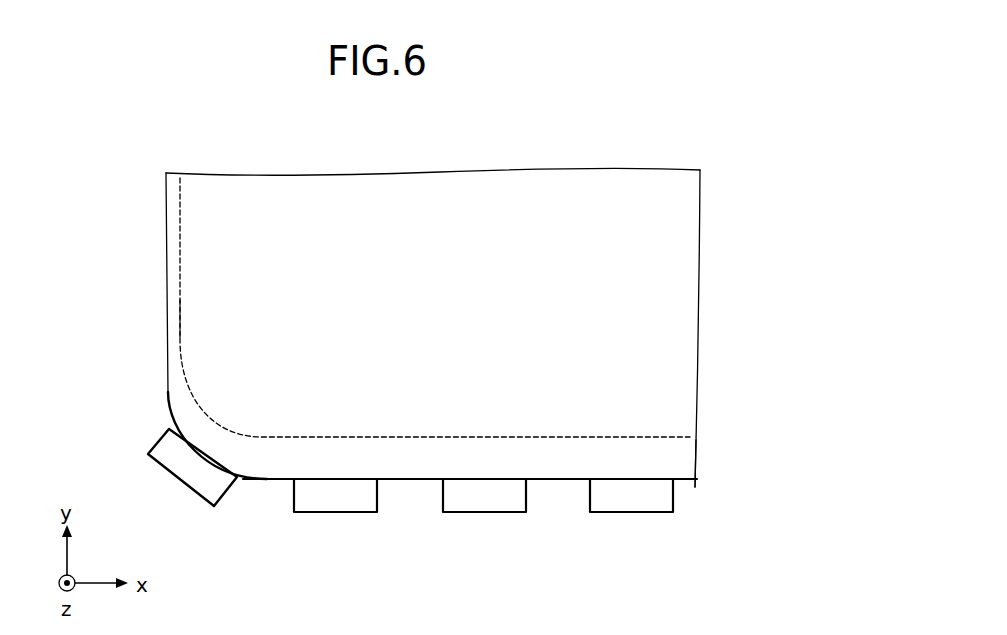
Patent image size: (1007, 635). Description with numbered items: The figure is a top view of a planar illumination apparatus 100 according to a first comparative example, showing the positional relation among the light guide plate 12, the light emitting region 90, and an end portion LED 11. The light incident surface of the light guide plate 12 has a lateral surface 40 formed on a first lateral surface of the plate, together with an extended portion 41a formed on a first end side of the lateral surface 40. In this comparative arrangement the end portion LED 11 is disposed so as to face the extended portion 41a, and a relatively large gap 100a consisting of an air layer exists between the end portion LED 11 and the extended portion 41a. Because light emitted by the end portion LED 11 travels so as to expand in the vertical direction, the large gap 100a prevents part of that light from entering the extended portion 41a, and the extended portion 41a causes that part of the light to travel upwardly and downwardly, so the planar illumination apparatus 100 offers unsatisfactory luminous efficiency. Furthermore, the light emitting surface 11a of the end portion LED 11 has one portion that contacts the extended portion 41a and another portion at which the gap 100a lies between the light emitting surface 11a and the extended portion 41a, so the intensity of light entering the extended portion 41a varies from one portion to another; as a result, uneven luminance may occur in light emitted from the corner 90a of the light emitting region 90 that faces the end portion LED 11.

The end portion LED 11 is at (198, 477).
The light emitting surface 11a is at (215, 457).
The light guide plate 12 is at (686, 466).
The lateral surface 40 is at (412, 481).
The extended portion 41a is at (188, 401).
The light emitting region 90 is at (442, 208).
The corner 90a is at (170, 395).
The planar illumination apparatus 100 is at (596, 138).
The gap 100a is at (160, 413).